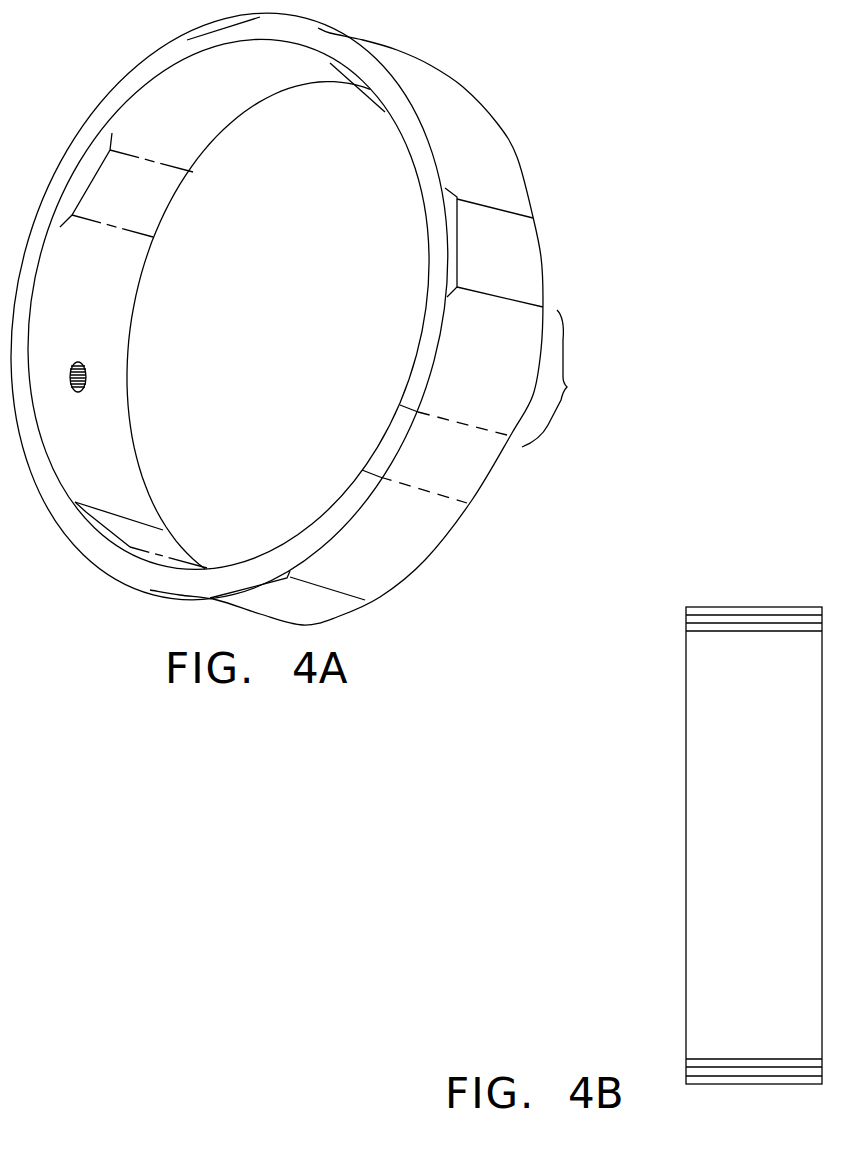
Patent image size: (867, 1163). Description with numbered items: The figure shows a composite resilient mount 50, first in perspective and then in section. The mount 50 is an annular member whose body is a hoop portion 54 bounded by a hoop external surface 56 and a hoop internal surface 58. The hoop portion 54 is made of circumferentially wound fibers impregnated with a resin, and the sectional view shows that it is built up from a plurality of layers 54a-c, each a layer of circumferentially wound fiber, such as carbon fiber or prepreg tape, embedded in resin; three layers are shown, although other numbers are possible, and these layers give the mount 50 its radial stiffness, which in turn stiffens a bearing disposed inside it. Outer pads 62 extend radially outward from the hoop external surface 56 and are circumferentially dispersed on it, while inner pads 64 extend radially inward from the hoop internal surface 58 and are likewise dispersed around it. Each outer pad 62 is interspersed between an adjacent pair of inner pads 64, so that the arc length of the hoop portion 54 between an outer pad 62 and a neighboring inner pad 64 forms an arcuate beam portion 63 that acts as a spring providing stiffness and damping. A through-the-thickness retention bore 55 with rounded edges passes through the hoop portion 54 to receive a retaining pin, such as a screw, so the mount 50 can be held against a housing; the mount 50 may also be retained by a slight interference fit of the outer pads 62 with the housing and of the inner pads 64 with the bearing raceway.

In FIG. 4A, the composite resilient mount 50 is at (116, 60).
In FIG. 4B, the composite resilient mount 50 is at (677, 803).
In FIG. 4A, the hoop portion 54 is at (410, 160).
In FIG. 4B, the hoop portion 54 is at (680, 790).
In FIG. 4B, the layers 54a-c is at (682, 622).
In FIG. 4A, the retention bore 55 is at (87, 368).
In FIG. 4A, the hoop external surface 56 is at (473, 124).
In FIG. 4A, the hoop internal surface 58 is at (98, 304).
In FIG. 4B, the hoop internal surface 58 is at (762, 914).
In FIG. 4A, the outer pads 62 is at (510, 250).
In FIG. 4A, the arcuate beam portions 63 is at (560, 378).
In FIG. 4A, the inner pads 64 is at (143, 196).